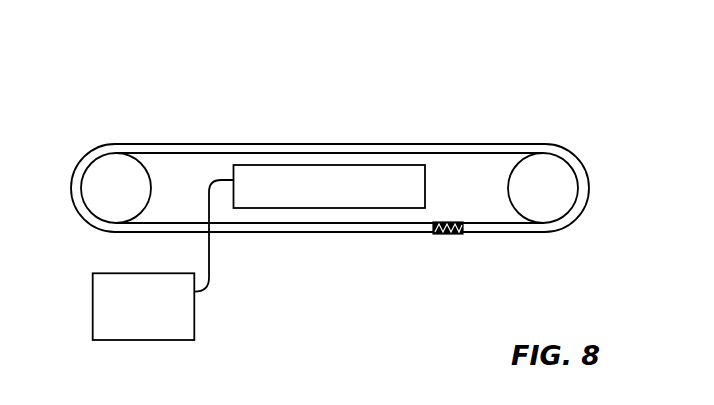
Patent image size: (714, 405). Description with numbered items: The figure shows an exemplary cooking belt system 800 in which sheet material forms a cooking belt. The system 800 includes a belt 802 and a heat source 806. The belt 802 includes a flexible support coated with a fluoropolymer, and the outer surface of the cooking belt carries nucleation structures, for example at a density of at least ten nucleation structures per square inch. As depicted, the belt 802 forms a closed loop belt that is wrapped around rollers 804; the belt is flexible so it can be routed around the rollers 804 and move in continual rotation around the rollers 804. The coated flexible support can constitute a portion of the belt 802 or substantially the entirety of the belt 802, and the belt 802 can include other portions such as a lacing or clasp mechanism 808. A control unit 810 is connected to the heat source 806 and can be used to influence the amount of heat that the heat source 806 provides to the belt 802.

The system 800 is at (350, 90).
The belt 802 is at (280, 232).
The rollers 804 is at (535, 193).
The heat source 806 is at (330, 186).
The lacing or clasp mechanism 808 is at (452, 233).
The control unit 810 is at (163, 260).